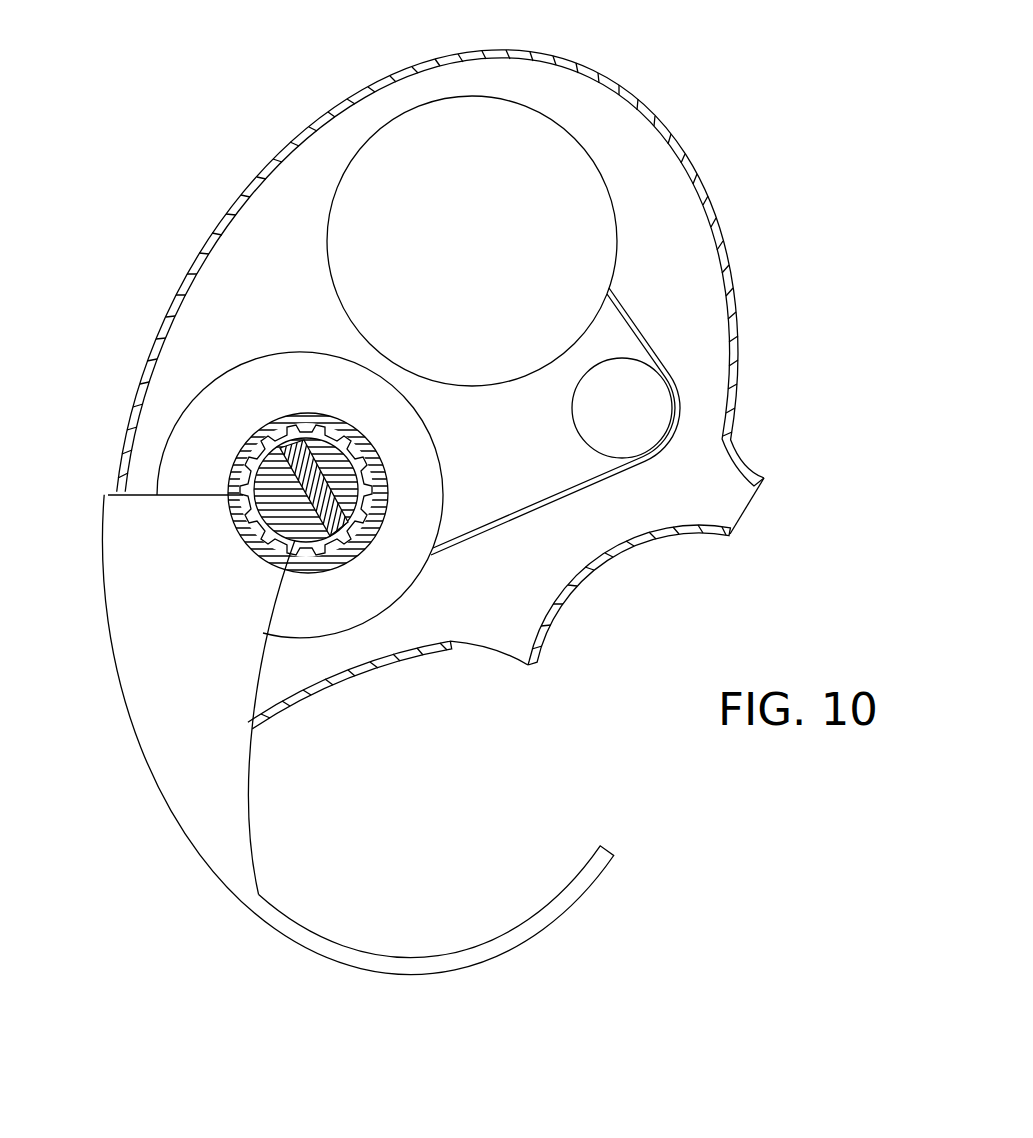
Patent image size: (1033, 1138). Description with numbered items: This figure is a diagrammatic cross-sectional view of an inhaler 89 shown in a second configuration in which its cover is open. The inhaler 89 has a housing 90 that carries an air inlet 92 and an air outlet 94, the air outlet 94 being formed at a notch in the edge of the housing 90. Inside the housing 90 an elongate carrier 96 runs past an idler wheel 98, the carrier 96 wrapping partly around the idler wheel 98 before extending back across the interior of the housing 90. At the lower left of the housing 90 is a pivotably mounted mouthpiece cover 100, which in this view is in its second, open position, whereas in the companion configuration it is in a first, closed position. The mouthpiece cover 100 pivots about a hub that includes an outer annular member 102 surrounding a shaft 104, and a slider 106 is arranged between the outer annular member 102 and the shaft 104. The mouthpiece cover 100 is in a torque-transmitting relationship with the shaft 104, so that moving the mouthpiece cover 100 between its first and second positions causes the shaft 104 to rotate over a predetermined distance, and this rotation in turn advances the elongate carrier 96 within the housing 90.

The inhaler 89 is at (476, 383).
The housing 90 is at (688, 165).
The air inlet 92 is at (500, 654).
The air outlet 94 is at (752, 502).
The elongate carrier 96 is at (628, 316).
The idler wheel 98 is at (643, 398).
The pivotably mounted mouthpiece cover 100 is at (192, 820).
The outer annular member 102 is at (243, 477).
The shaft 104 is at (313, 457).
The slider 106 is at (270, 460).